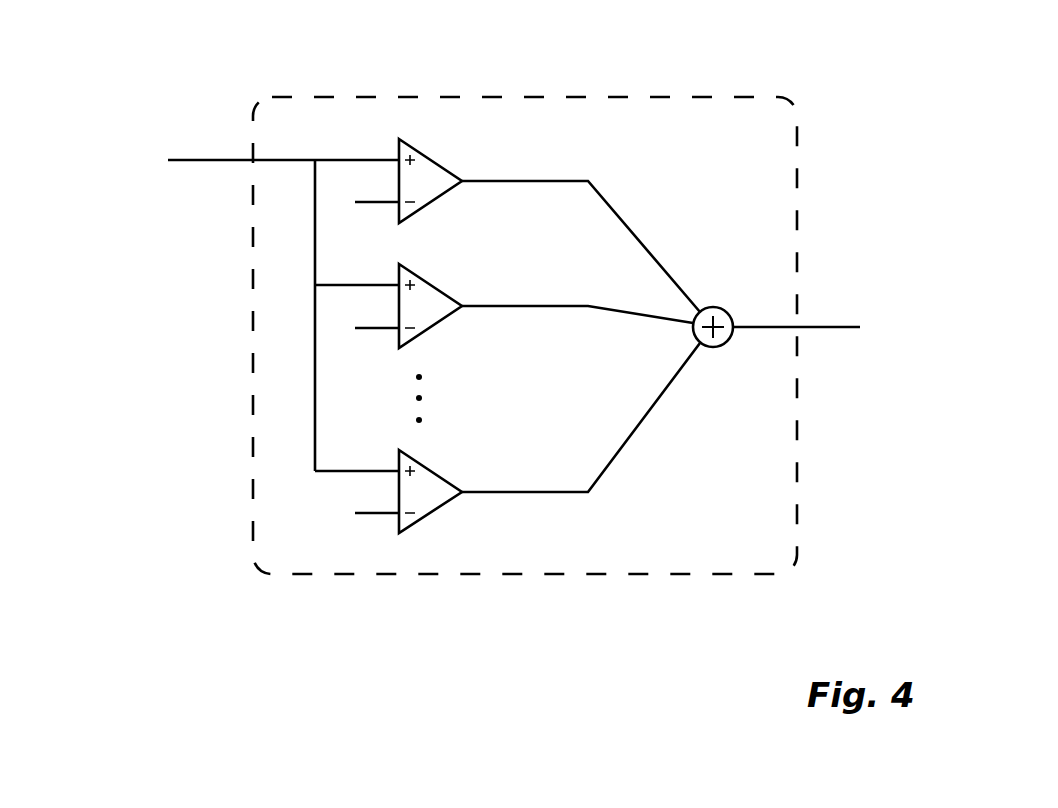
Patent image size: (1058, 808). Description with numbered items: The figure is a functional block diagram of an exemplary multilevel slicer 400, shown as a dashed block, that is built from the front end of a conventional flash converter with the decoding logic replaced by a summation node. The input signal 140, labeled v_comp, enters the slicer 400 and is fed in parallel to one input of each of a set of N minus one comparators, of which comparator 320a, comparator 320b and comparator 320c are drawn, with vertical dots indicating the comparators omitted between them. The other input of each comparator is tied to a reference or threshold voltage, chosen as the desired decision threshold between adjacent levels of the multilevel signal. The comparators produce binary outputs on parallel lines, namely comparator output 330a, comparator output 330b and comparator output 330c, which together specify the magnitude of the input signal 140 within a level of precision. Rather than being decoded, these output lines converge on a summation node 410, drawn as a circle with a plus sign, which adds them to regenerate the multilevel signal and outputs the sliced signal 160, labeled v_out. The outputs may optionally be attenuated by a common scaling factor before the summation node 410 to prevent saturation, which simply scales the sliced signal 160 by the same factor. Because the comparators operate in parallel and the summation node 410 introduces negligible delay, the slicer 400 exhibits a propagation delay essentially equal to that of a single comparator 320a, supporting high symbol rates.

The input signal 140 is at (178, 130).
The slicer 400 is at (535, 97).
The comparator 320a is at (430, 155).
The comparator 320b is at (430, 280).
The comparator 320c is at (430, 467).
The comparator output 330a is at (568, 180).
The comparator output 330b is at (505, 308).
The comparator output 330c is at (567, 492).
The summation node 410 is at (728, 352).
The sliced signal 160 is at (828, 293).